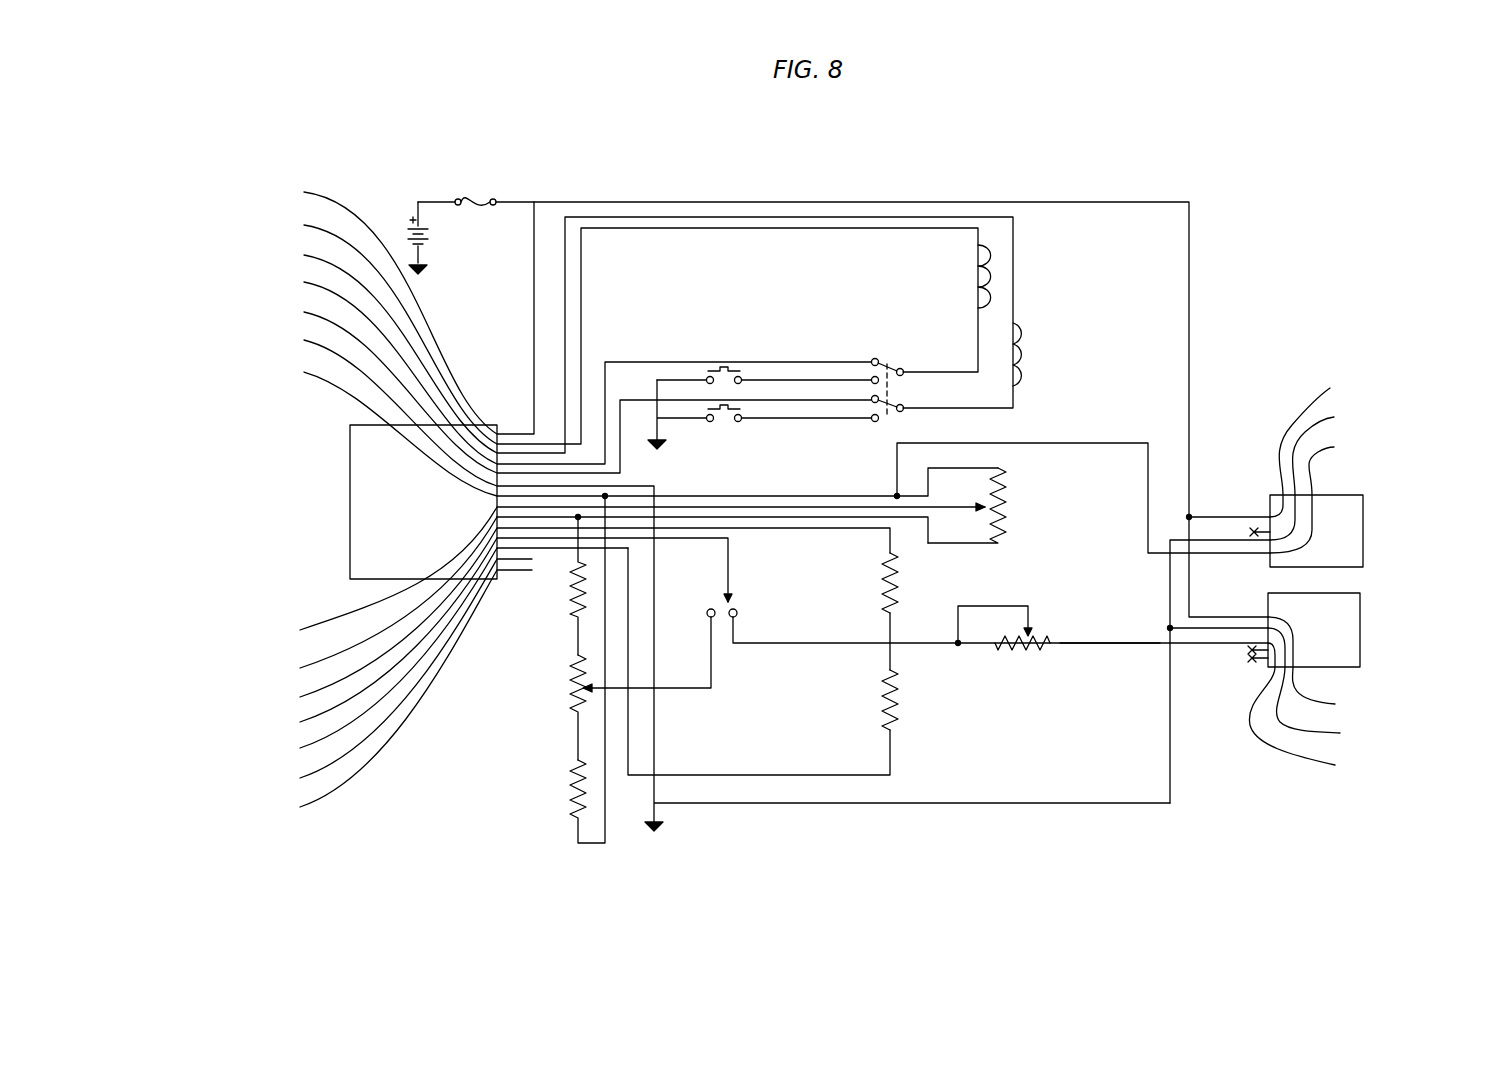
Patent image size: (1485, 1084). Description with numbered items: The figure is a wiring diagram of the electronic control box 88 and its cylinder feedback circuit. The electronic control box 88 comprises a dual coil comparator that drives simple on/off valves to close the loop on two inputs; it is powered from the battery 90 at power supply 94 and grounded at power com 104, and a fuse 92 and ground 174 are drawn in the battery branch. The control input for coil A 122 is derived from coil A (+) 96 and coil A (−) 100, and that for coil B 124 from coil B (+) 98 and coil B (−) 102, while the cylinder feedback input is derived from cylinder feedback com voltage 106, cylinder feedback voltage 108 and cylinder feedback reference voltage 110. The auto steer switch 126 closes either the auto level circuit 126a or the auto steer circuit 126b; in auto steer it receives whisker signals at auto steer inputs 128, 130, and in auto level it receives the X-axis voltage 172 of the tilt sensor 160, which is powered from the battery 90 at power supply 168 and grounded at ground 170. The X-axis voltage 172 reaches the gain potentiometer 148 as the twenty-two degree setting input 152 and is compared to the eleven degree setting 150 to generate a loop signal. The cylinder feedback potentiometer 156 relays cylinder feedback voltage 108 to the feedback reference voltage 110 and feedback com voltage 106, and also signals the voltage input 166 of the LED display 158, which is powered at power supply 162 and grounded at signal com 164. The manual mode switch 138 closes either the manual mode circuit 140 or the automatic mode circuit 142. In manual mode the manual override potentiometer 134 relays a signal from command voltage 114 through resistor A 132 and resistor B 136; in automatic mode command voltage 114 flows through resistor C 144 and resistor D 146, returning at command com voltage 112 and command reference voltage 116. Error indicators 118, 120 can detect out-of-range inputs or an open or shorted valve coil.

The electronic control box 88 is at (350, 499).
The battery 90 is at (405, 240).
The fuse 92 is at (483, 196).
The power supply 94 is at (402, 305).
The coil A (+) 96 is at (624, 326).
The coil B (+) 98 is at (640, 335).
The coil A (−) 100 is at (565, 366).
The coil B (−) 102 is at (565, 386).
The power com 104 is at (714, 574).
The cylinder feedback com voltage 106 is at (764, 456).
The cylinder feedback voltage 108 is at (618, 575).
The cylinder feedback reference voltage 110 is at (416, 599).
The command com voltage 112 is at (571, 651).
The command voltage 114 is at (490, 637).
The command reference voltage 116 is at (440, 656).
The error indicator 118 is at (392, 677).
The error indicator 120 is at (390, 696).
The coil A 122 is at (975, 285).
The coil B 124 is at (1020, 357).
The auto steer switch 126 is at (894, 386).
The auto level circuit 126a is at (873, 359).
The auto steer circuit 126b is at (872, 378).
The auto steer input 128 is at (731, 365).
The auto steer input 130 is at (724, 425).
The resistor A 132 is at (560, 583).
The manual override potentiometer 134 is at (567, 686).
The resistor B 136 is at (560, 800).
The manual mode switch 138 is at (730, 580).
The manual mode circuit 140 is at (708, 608).
The automatic mode circuit 142 is at (737, 608).
The resistor C 144 is at (908, 583).
The resistor D 146 is at (882, 708).
The gain potentiometer 148 is at (1027, 652).
The 11° setting 150 is at (973, 648).
The 22° setting input 152 is at (1113, 650).
The cylinder feedback potentiometer 156 is at (1012, 496).
The LED display 158 is at (1363, 528).
The tilt sensor 160 is at (1360, 627).
The power supply 162 is at (1330, 388).
The signal com 164 is at (1334, 417).
The voltage input 166 is at (1334, 447).
The power supply 168 is at (1322, 668).
The ground 170 is at (1325, 687).
The X-axis voltage 172 is at (1313, 713).
The ground 174 is at (660, 826).